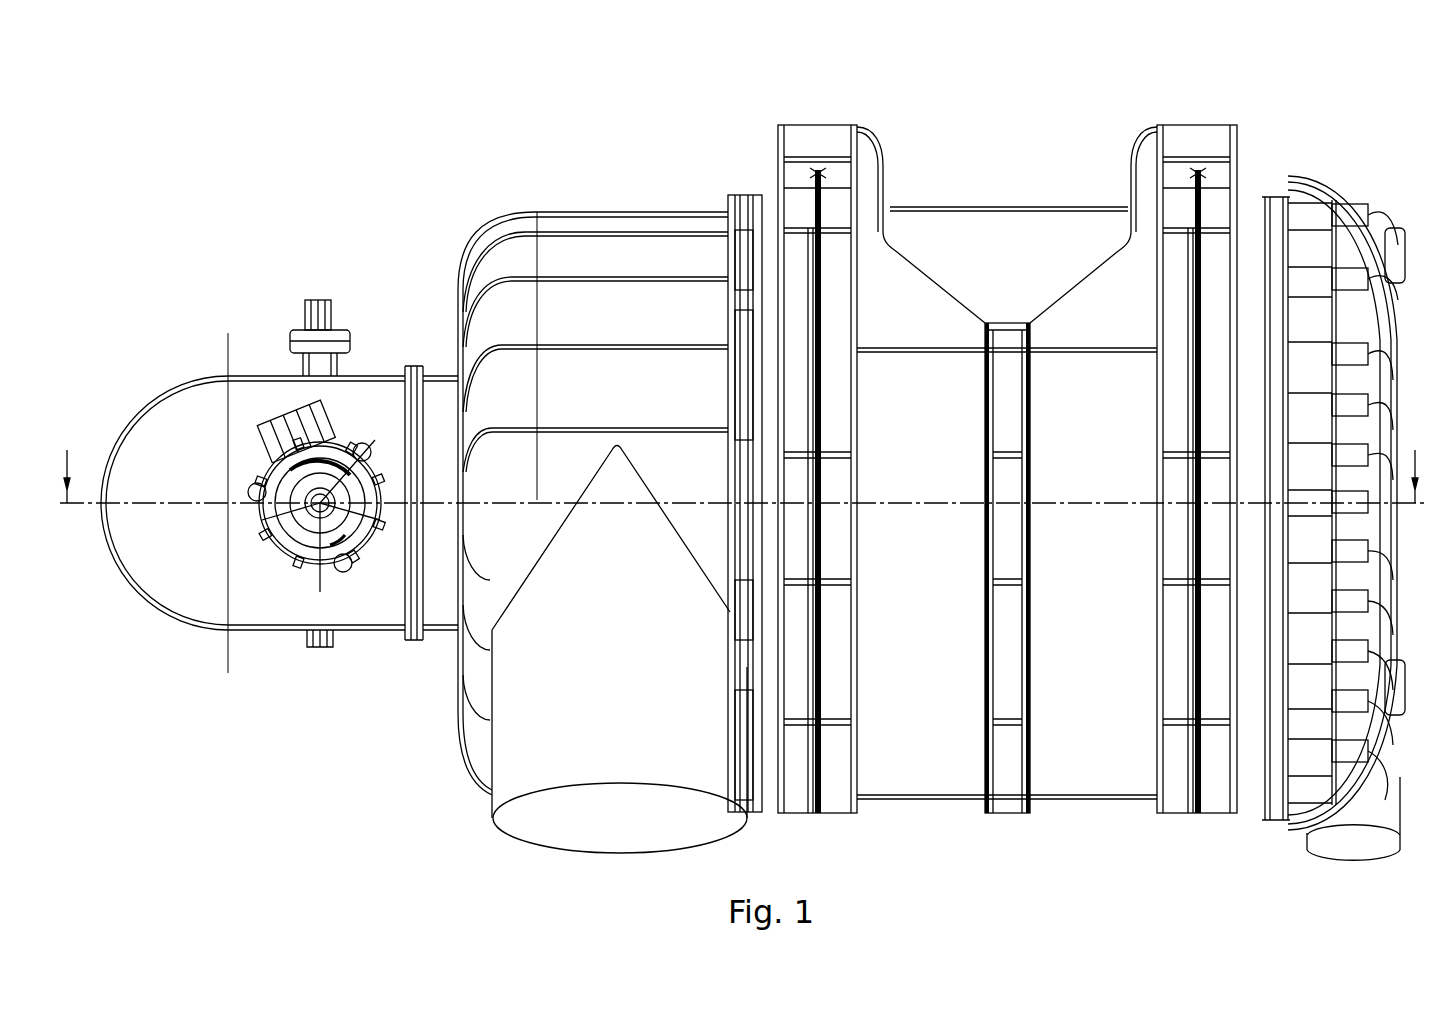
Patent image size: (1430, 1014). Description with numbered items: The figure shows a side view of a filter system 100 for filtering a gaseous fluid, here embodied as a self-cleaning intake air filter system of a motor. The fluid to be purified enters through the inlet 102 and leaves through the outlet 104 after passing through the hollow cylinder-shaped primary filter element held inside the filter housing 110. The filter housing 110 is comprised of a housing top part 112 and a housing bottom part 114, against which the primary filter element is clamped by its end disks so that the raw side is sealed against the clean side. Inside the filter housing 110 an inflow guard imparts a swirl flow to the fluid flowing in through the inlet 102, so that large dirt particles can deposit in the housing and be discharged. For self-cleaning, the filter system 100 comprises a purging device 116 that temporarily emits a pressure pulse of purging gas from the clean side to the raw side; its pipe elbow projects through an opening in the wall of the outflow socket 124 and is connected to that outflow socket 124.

The filter system 100 is at (347, 133).
The inlet 102 is at (488, 812).
The outlet 104 is at (200, 390).
The filter housing 110 is at (530, 210).
The housing top part 112 is at (1013, 205).
The housing bottom part 114 is at (1340, 197).
The purging device 116 is at (300, 330).
The outflow socket 124 is at (392, 390).